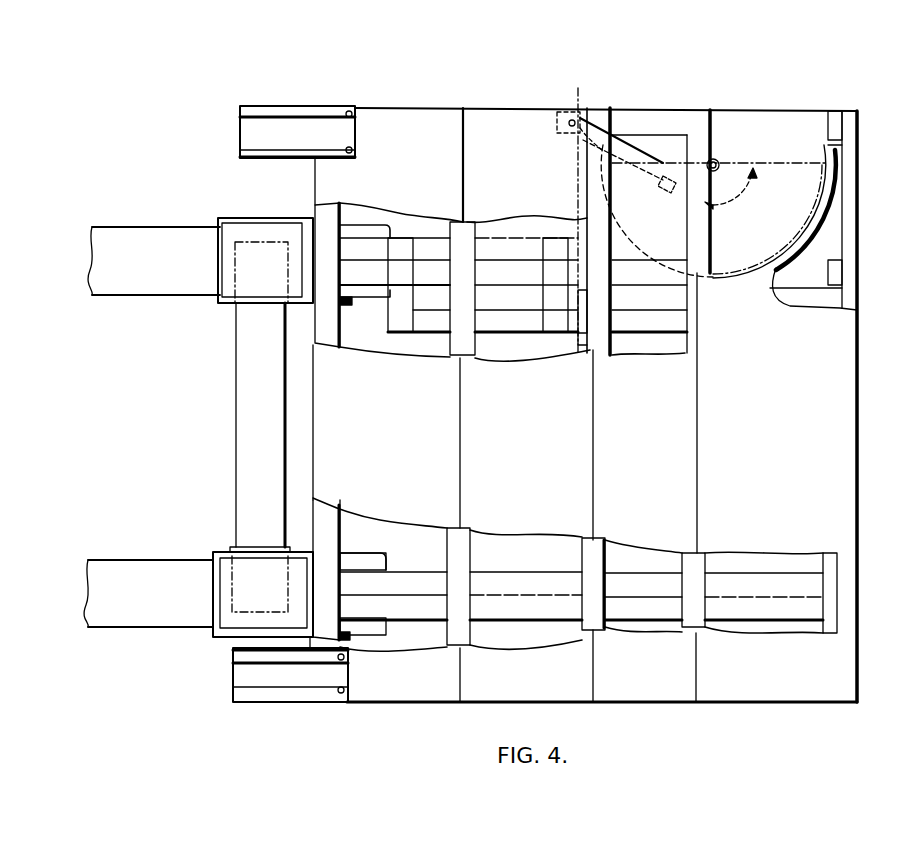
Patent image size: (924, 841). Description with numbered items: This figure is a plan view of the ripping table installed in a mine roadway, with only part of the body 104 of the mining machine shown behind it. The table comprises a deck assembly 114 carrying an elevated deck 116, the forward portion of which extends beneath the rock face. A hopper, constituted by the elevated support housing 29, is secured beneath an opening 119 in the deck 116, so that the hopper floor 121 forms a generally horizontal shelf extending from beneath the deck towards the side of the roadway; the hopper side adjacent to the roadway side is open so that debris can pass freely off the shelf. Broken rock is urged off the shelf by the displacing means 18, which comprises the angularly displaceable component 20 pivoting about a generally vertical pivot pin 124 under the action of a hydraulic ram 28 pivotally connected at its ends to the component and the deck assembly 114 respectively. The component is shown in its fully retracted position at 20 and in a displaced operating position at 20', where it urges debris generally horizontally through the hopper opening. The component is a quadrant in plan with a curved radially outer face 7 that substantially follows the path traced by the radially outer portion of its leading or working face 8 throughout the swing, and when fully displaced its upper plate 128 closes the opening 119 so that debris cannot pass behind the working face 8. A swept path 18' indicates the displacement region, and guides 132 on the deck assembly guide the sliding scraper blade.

The curved radially outer face 7 is at (610, 250).
The leading or working face 8 is at (630, 163).
The displacing means 18 is at (657, 215).
The arcuate guide 18' is at (803, 177).
The angularly displaceable component 20 is at (684, 182).
The angularly displaceable component in displaced operating position 20' is at (867, 209).
The hydraulic ram 28 is at (630, 164).
The elevated support housing 29 is at (788, 118).
The body of mining machine 104 is at (148, 625).
The deck assembly 114 is at (845, 364).
The elevated deck 116 is at (786, 421).
The opening in the deck 119 is at (733, 279).
The hopper floor 121 is at (824, 192).
The pivot pin 124 is at (716, 160).
The upper plate 128 is at (664, 229).
The guides 132 is at (280, 150).